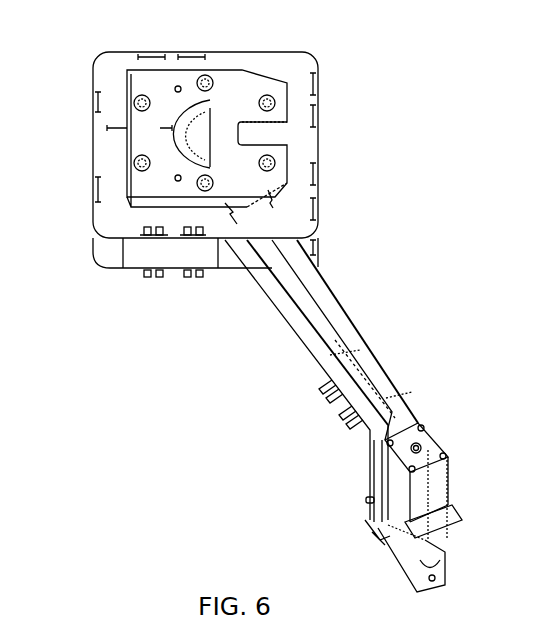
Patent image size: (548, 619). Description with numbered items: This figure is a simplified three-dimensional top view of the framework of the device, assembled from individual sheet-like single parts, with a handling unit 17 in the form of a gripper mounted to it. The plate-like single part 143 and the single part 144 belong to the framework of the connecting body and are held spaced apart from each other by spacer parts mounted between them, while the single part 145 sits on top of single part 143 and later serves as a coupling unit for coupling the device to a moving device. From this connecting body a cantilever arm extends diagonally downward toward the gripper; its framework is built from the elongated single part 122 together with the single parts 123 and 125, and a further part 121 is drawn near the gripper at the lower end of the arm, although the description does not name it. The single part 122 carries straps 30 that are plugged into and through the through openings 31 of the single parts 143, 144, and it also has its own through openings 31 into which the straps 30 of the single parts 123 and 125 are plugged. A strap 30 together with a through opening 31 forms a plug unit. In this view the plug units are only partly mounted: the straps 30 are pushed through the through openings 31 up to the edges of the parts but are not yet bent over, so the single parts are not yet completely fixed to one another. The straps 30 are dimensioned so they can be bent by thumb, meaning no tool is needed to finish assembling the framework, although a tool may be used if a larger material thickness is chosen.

The single part 143 is at (105, 58).
The single part 145 is at (258, 78).
The through opening 31 is at (313, 118).
The strap 30 is at (150, 227).
The single part 144 is at (100, 248).
The single part 125 is at (133, 260).
The single part 122 is at (290, 313).
The single part 123 is at (375, 377).
The handling unit 17 is at (448, 485).
The bracket 121 is at (365, 500).